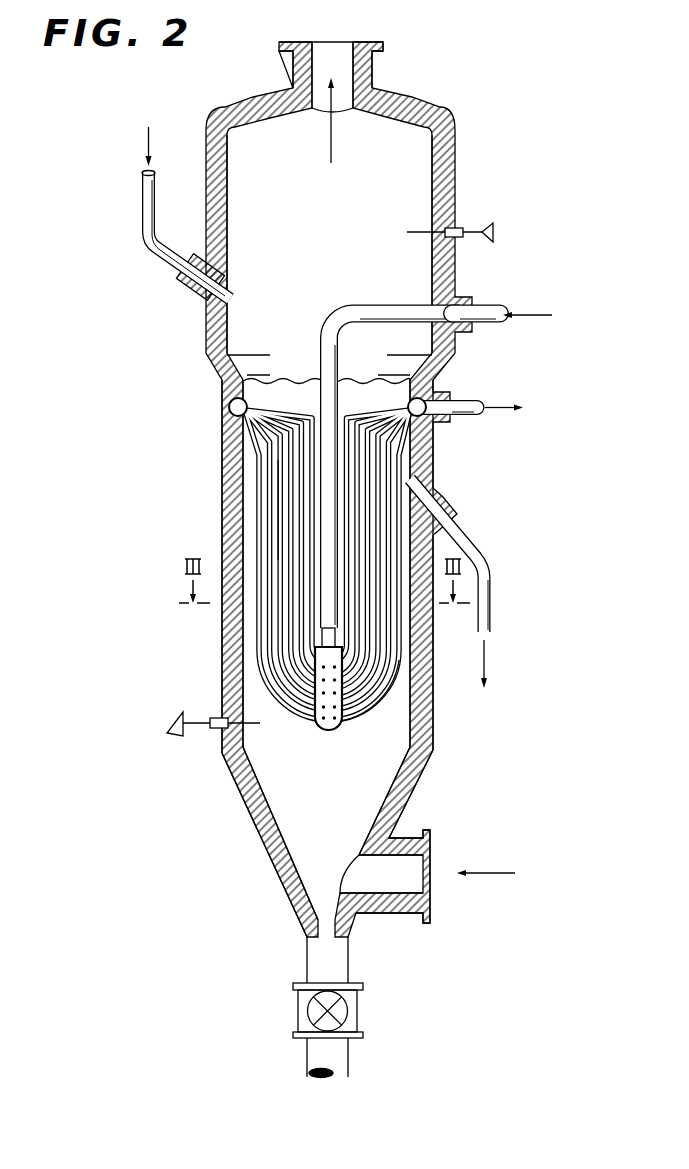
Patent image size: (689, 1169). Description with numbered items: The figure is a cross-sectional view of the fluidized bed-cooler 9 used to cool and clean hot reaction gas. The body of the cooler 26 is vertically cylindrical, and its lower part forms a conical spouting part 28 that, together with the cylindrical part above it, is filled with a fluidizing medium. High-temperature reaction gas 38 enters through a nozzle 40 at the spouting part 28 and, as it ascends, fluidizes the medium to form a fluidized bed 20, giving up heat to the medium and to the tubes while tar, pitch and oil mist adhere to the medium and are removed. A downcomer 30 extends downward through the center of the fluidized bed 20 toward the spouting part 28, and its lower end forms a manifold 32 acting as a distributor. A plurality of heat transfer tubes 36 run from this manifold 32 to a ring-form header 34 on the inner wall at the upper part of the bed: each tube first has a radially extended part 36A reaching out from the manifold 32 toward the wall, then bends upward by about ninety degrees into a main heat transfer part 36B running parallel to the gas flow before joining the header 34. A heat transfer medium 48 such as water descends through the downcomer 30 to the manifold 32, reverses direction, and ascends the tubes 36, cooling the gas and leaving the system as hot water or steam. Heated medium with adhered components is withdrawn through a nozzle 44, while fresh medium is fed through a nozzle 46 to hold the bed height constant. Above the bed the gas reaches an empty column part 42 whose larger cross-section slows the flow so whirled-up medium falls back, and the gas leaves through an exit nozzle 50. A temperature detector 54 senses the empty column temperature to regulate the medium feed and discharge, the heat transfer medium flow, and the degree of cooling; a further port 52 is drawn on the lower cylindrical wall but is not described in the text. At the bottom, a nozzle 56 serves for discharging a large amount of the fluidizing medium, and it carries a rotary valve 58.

The fluidized bed-cooler 9 is at (217, 508).
The fluidized bed 20 is at (243, 627).
The body of the fluidized bed-cooler 26 is at (222, 443).
The conical spouting part 28 is at (387, 778).
The downcomer 30 is at (320, 344).
The manifold 32 is at (318, 730).
The ring-form header 34 is at (428, 418).
The heat transfer tubes 36 is at (256, 548).
The radially extended part 36A is at (367, 719).
The main heat transfer part 36B is at (279, 500).
The reaction gas 38 is at (483, 873).
The nozzle 40 is at (430, 884).
The empty column part 42 is at (346, 225).
The nozzle 44 is at (457, 509).
The nozzle 46 is at (165, 258).
The heat transfer medium 48 is at (531, 306).
The exit nozzle 50 is at (373, 75).
The sampling port 52 is at (175, 737).
The temperature detector 54 is at (490, 228).
The nozzle 56 is at (349, 958).
The rotary valve 58 is at (342, 1010).